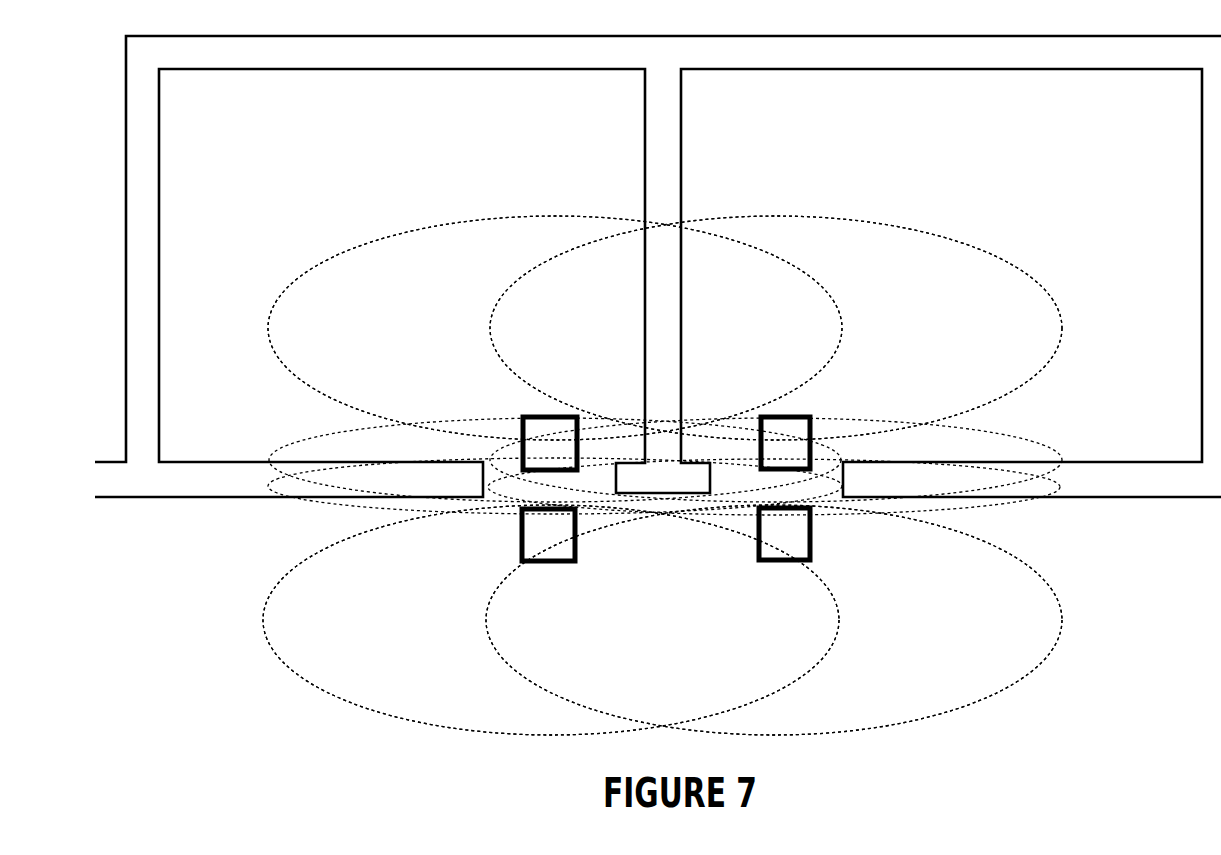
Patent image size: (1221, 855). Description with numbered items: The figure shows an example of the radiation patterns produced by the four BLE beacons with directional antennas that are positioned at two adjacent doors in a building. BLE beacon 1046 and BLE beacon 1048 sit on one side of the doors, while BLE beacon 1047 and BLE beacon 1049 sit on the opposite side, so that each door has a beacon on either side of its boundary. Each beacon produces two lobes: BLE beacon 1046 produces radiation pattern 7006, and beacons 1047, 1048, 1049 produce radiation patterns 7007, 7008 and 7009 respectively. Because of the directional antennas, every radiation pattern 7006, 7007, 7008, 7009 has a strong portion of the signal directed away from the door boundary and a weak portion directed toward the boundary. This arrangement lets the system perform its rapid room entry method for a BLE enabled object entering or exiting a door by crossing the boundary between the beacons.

The BLE beacon 1046 is at (555, 359).
The BLE beacon 1047 is at (552, 596).
The BLE beacon 1048 is at (776, 359).
The BLE beacon 1049 is at (774, 597).
The radiation pattern 7006 is at (312, 437).
The radiation pattern 7007 is at (265, 620).
The radiation pattern 7008 is at (968, 432).
The radiation pattern 7009 is at (1002, 570).